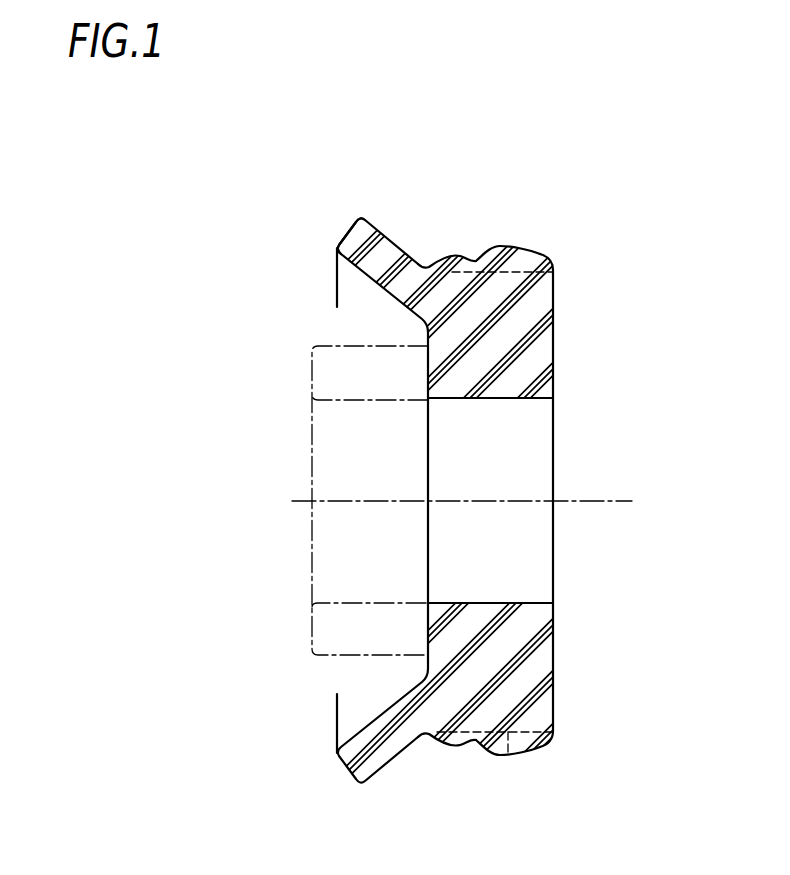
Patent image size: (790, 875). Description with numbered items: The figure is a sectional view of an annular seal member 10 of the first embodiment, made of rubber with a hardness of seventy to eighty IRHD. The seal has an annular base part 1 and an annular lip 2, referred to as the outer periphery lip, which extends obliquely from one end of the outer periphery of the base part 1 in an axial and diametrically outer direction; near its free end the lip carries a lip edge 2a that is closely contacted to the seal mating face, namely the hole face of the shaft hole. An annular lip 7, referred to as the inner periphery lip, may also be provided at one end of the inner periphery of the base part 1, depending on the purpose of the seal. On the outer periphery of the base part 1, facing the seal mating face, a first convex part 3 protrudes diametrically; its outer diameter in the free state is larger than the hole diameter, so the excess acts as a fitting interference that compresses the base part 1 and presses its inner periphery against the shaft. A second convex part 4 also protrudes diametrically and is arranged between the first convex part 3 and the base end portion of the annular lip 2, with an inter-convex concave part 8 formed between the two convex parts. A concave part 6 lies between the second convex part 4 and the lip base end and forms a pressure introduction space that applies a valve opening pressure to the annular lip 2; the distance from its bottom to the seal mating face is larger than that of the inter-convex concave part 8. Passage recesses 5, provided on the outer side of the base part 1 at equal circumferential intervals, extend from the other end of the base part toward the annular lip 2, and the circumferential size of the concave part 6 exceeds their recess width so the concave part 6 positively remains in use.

The annular base part 1 is at (533, 352).
The annular lip 2 is at (387, 248).
The lip edge 2a is at (358, 218).
The first convex part 3 is at (508, 246).
The second convex part 4 is at (458, 257).
The passage recess 5 is at (477, 270).
The concave part 6 is at (430, 733).
The annular lip 7 is at (330, 378).
The inter-convex concave part 8 is at (478, 744).
The annular seal member 10 is at (571, 270).